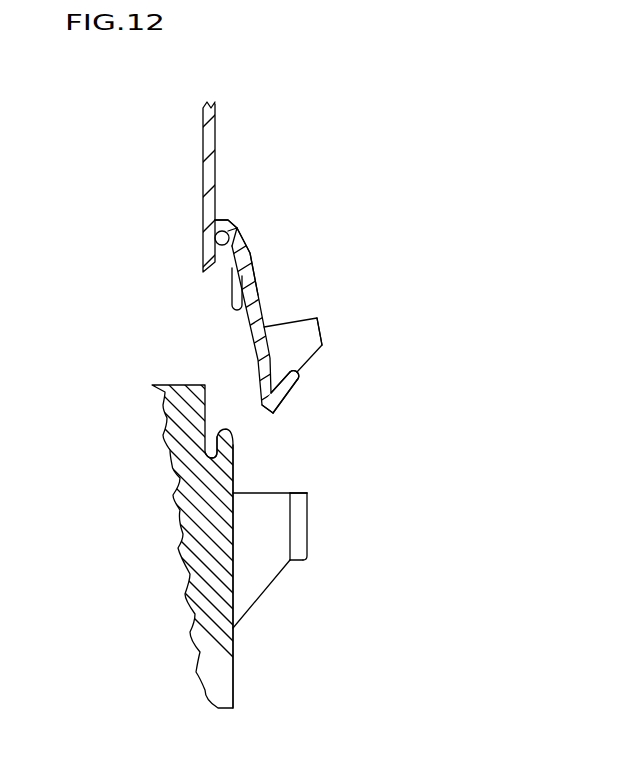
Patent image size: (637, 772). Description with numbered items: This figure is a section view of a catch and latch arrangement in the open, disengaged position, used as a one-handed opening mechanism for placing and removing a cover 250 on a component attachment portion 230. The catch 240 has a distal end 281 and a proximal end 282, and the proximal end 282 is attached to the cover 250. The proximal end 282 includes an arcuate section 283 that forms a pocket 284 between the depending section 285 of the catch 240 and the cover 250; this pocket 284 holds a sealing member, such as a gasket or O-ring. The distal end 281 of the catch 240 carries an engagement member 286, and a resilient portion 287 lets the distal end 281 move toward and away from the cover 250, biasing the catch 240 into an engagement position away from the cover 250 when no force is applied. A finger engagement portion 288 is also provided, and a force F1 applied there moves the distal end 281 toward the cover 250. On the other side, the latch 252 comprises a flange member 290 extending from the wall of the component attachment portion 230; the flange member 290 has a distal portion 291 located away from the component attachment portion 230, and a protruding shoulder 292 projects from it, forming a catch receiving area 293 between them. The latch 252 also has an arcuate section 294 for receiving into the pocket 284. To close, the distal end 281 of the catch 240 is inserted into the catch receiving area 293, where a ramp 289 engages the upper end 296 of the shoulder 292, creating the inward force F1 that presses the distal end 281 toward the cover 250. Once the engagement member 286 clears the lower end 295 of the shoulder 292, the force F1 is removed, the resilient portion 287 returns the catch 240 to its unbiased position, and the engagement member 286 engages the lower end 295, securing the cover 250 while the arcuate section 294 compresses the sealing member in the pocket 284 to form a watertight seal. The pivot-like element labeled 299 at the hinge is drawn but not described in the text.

The component attachment portion 230 is at (202, 617).
The catch 240 is at (357, 576).
The cover 250 is at (215, 150).
The latch 252 is at (267, 255).
The distal end 281 is at (228, 231).
The proximal end 282 is at (293, 393).
The arcuate section 283 is at (231, 234).
The pocket 284 is at (223, 258).
The depending section 285 is at (262, 305).
The engagement member 286 is at (283, 400).
The resilient portion 287 is at (253, 263).
The finger engagement portion 288 is at (298, 378).
The ramp 289 is at (320, 345).
The flange member 290 is at (314, 550).
The distal portion 291 is at (302, 492).
The protruding shoulder 292 is at (308, 548).
The catch receiving area 293 is at (267, 558).
The arcuate section 294 is at (222, 440).
The lower end 295 is at (302, 563).
The upper end 296 is at (339, 537).
The pivot pin 299 is at (215, 237).
The inward force F1 is at (330, 322).